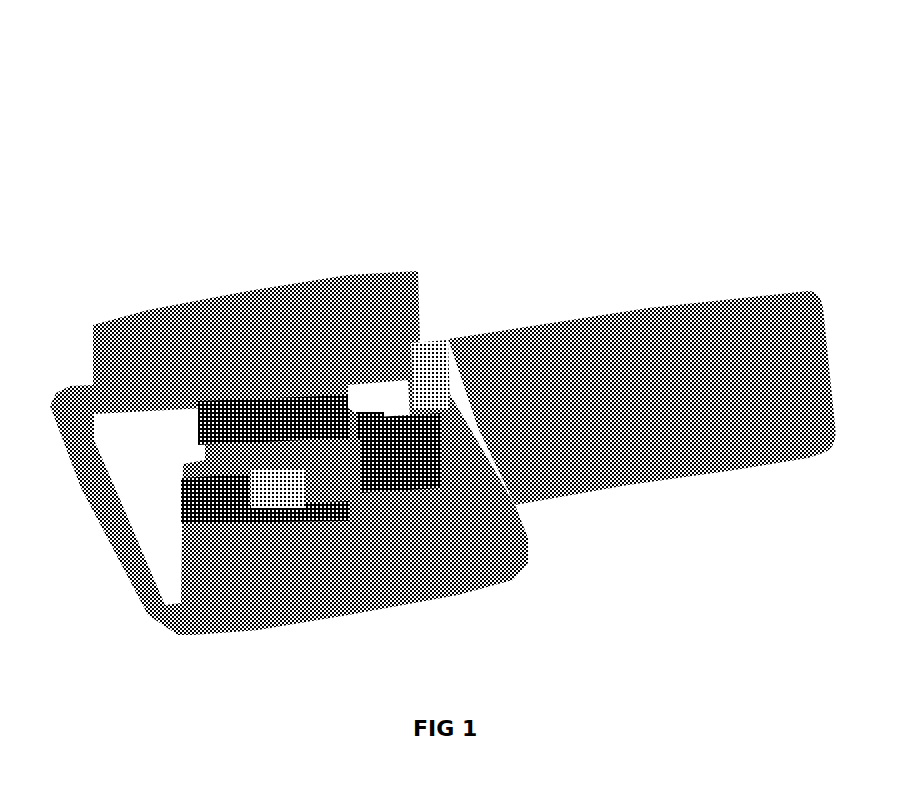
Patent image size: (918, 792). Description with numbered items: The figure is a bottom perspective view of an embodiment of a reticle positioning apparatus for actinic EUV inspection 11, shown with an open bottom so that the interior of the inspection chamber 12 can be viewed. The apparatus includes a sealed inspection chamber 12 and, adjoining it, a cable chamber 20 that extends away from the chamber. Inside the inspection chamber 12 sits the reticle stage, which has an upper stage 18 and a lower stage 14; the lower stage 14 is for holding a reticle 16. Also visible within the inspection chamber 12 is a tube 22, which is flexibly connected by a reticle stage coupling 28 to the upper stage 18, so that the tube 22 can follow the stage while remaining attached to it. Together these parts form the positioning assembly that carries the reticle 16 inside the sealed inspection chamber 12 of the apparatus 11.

The reticle positioning apparatus for actinic EUV inspection 11 is at (443, 400).
The inspection chamber 12 is at (170, 416).
The lower stage 14 is at (300, 400).
The reticle 16 is at (275, 478).
The upper stage 18 is at (188, 407).
The cable chamber 20 is at (660, 457).
The tube 22 is at (387, 412).
The reticle stage coupling 28 is at (360, 410).